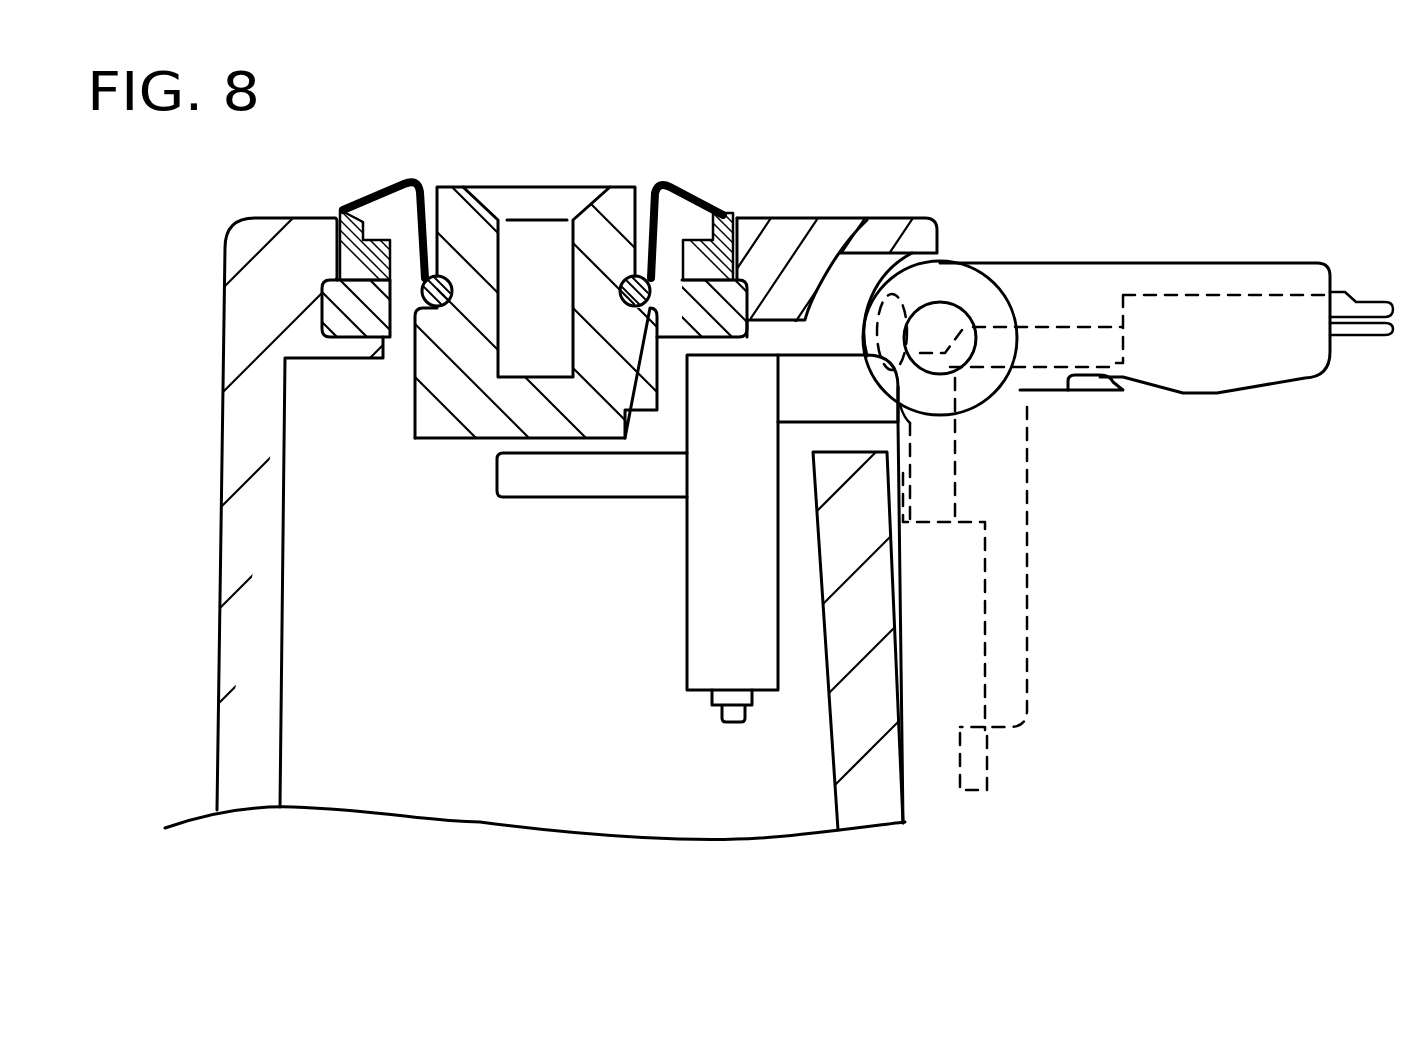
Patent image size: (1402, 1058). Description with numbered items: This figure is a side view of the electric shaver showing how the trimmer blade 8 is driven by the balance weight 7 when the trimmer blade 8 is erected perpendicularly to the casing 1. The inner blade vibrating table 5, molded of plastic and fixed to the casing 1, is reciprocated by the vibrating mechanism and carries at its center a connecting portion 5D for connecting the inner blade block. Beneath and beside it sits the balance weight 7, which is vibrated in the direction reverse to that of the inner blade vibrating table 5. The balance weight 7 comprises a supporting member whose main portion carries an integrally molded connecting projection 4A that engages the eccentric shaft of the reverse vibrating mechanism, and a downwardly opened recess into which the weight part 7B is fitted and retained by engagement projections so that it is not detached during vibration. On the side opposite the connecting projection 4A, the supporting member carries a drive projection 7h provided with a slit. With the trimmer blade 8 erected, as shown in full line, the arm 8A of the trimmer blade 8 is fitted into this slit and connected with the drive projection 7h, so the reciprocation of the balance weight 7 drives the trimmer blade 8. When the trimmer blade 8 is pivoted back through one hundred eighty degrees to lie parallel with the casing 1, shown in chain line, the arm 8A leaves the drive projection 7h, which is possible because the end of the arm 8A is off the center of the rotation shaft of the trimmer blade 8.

The casing 1 is at (893, 798).
The connecting projection 4A is at (590, 487).
The inner blade vibrating table 5 is at (440, 418).
The connecting portion 5D is at (463, 222).
The balance weight 7 is at (675, 550).
The weight part 7B is at (735, 726).
The drive projection 7h is at (836, 383).
The trimmer blade 8 is at (1190, 256).
The arm 8A is at (1102, 376).